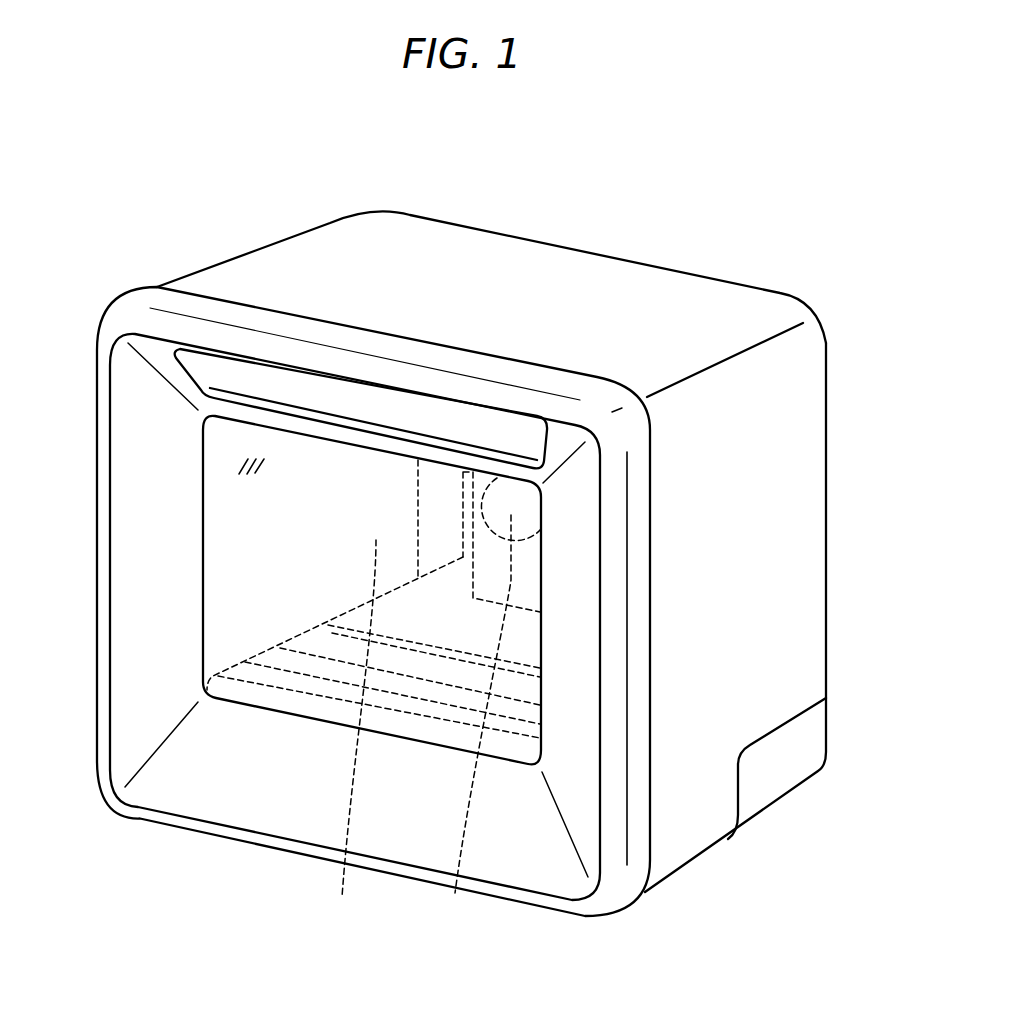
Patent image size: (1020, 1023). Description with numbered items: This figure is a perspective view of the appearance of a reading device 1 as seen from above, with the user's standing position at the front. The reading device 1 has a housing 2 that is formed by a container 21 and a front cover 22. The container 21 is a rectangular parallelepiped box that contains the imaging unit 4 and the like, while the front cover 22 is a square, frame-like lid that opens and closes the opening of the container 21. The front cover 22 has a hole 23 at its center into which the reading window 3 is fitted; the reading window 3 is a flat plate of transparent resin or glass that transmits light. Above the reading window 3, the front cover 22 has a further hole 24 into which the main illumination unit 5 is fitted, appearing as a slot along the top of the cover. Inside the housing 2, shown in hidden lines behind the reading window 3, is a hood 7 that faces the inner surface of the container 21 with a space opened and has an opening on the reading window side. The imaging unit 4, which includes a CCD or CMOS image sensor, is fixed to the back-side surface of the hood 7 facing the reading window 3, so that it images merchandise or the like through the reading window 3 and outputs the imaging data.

The reading device 1 is at (715, 150).
The housing 2 is at (675, 298).
The reading window 3 is at (227, 493).
The imaging unit 4 is at (492, 709).
The main illumination unit 5 is at (275, 383).
The hood 7 is at (355, 733).
The container 21 is at (812, 518).
The front cover 22 is at (125, 539).
The hole 23 is at (203, 602).
The hole 24 is at (190, 372).